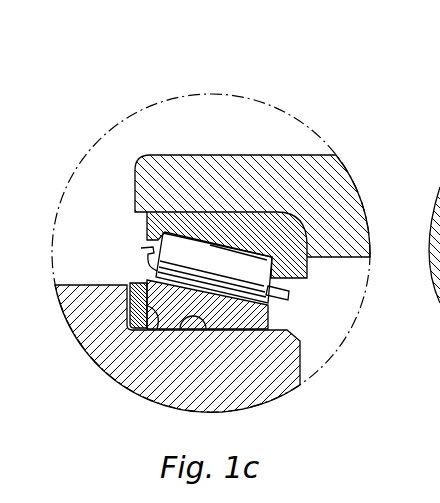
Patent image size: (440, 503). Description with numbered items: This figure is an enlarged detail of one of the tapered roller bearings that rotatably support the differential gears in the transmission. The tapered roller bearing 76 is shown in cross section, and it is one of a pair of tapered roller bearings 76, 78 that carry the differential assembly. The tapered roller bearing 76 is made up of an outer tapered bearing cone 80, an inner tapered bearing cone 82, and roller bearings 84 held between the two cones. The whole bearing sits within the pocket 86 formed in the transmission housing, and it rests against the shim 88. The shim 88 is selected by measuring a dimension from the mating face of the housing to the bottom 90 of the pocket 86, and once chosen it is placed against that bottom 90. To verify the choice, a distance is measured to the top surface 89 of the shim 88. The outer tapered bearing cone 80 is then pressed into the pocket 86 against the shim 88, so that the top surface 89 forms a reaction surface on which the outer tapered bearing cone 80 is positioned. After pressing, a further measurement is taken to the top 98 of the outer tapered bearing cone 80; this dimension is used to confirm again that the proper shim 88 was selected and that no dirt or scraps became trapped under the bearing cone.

The tapered roller bearing 76 is at (127, 240).
The tapered roller bearing 78 is at (439, 350).
The outer tapered bearing cone 80 is at (226, 305).
The inner tapered bearing cone 82 is at (214, 228).
The roller bearings 84 is at (235, 263).
The pocket 86 is at (168, 329).
The shim 88 is at (97, 352).
The top surface 89 is at (157, 330).
The bottom 90 is at (145, 284).
The top 98 is at (267, 322).